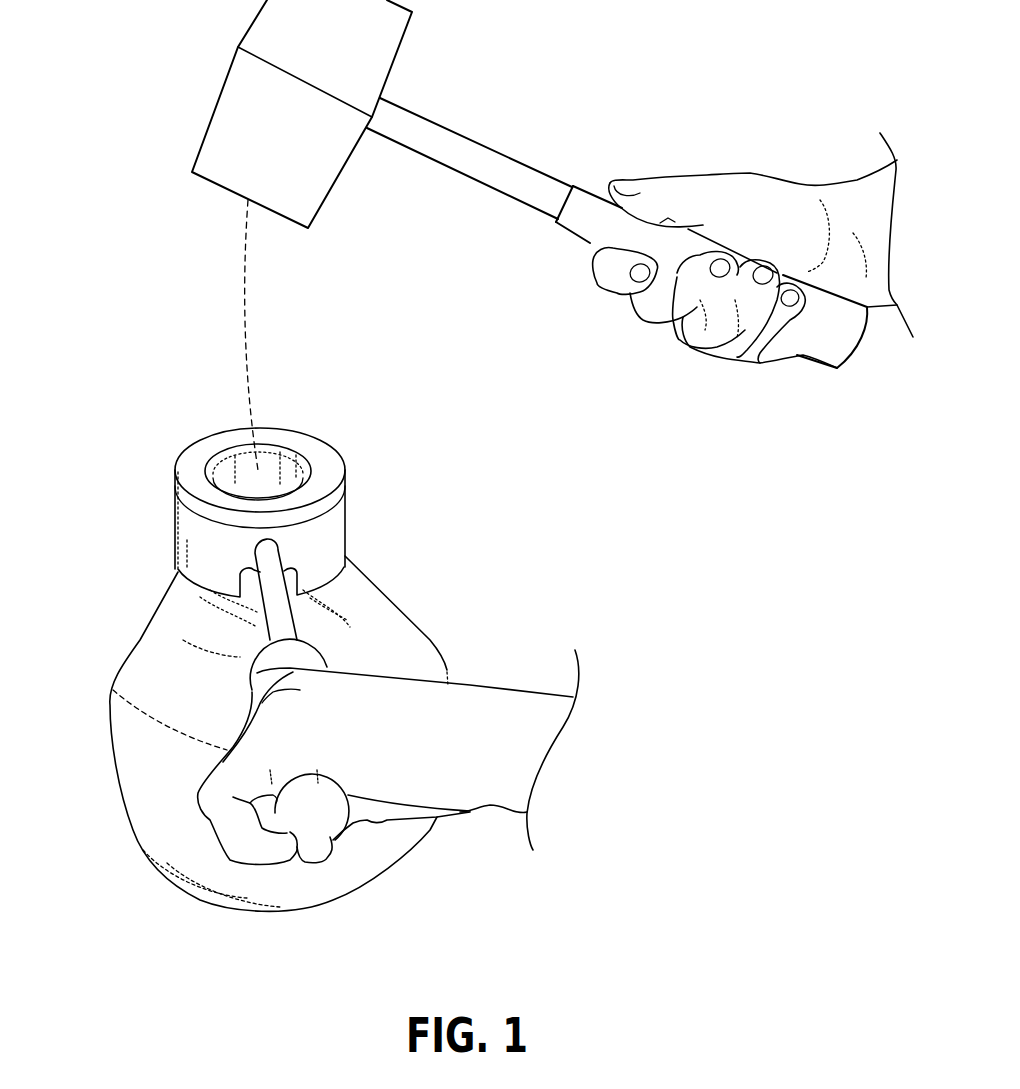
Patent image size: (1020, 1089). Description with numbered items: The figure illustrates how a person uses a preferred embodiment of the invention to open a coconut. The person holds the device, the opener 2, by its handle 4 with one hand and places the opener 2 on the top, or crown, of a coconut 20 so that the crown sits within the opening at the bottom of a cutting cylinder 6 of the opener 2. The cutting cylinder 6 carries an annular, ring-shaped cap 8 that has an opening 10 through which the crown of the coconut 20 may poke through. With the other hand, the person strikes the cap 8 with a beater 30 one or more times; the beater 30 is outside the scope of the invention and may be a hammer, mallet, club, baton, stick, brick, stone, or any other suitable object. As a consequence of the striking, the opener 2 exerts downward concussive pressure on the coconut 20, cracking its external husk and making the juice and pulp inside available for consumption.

The opener 2 is at (198, 415).
The handle 4 is at (273, 613).
The cutting cylinder 6 is at (208, 557).
The cap 8 is at (200, 462).
The opening 10 is at (260, 482).
The coconut 20 is at (170, 760).
The beater 30 is at (458, 150).